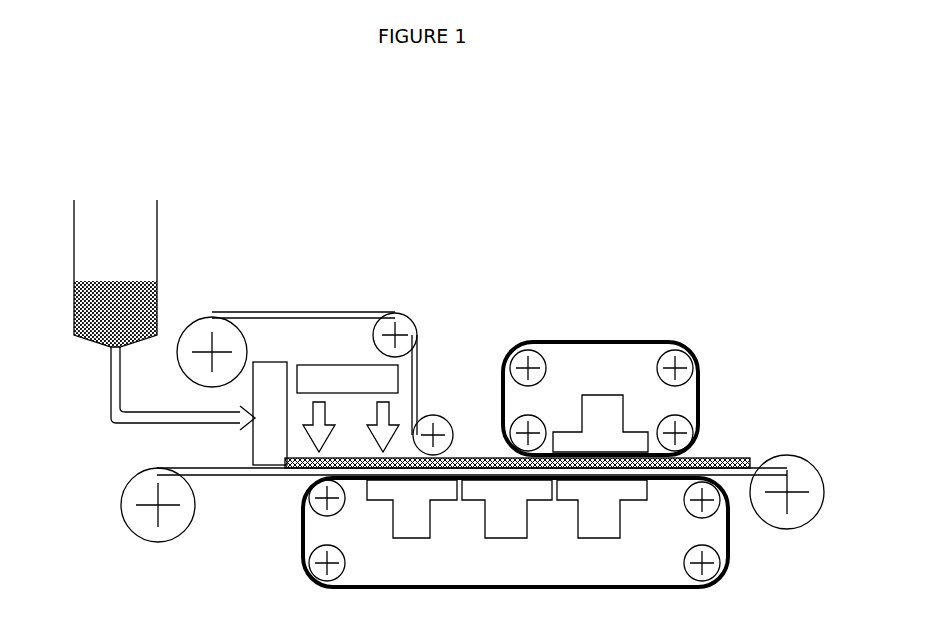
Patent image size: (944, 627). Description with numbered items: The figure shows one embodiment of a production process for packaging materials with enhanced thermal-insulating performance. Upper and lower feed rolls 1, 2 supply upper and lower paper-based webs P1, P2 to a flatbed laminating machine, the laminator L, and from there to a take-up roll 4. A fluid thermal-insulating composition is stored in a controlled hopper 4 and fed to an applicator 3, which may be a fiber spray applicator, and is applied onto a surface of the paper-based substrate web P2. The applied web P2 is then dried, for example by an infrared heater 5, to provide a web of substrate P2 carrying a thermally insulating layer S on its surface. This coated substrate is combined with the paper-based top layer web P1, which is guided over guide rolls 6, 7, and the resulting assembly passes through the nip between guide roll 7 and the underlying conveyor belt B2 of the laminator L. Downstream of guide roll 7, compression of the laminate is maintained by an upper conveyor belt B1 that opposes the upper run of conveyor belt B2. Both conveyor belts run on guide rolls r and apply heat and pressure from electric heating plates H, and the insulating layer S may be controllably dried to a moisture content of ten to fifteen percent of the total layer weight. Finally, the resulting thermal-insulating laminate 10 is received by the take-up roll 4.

The upper feed roll 1 is at (190, 520).
The lower feed roll 2 is at (200, 322).
The applicator 3 is at (270, 362).
The controlled hopper / take-up roll 4 is at (157, 270).
The infrared heater 5 is at (370, 365).
The guide roll 6 is at (403, 315).
The guide roll 7 is at (432, 415).
The thermal-insulating laminate 10 is at (740, 449).
The upper paper-based web P1 is at (292, 312).
The lower paper-based web P2 is at (222, 476).
The thermally insulating layer S is at (330, 460).
The laminator L is at (529, 617).
The upper conveyor belt B1 is at (605, 342).
The lower conveyor belt B2 is at (440, 590).
The electric heating plates H is at (608, 395).
The guide rolls r is at (548, 373).